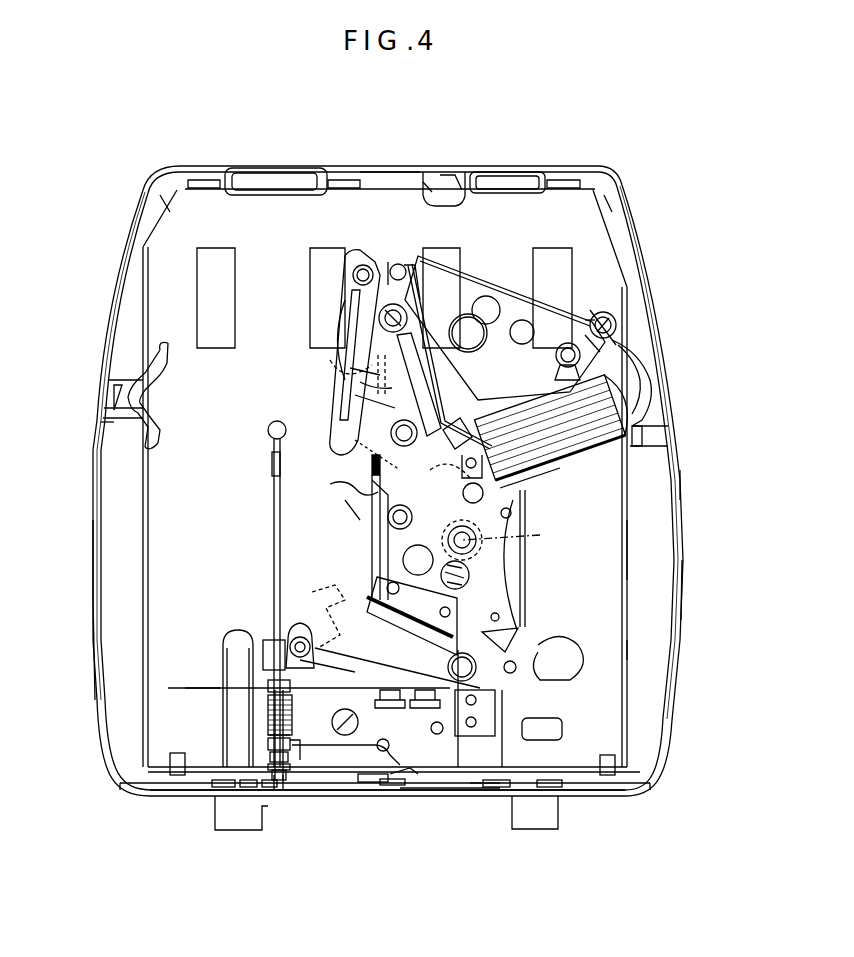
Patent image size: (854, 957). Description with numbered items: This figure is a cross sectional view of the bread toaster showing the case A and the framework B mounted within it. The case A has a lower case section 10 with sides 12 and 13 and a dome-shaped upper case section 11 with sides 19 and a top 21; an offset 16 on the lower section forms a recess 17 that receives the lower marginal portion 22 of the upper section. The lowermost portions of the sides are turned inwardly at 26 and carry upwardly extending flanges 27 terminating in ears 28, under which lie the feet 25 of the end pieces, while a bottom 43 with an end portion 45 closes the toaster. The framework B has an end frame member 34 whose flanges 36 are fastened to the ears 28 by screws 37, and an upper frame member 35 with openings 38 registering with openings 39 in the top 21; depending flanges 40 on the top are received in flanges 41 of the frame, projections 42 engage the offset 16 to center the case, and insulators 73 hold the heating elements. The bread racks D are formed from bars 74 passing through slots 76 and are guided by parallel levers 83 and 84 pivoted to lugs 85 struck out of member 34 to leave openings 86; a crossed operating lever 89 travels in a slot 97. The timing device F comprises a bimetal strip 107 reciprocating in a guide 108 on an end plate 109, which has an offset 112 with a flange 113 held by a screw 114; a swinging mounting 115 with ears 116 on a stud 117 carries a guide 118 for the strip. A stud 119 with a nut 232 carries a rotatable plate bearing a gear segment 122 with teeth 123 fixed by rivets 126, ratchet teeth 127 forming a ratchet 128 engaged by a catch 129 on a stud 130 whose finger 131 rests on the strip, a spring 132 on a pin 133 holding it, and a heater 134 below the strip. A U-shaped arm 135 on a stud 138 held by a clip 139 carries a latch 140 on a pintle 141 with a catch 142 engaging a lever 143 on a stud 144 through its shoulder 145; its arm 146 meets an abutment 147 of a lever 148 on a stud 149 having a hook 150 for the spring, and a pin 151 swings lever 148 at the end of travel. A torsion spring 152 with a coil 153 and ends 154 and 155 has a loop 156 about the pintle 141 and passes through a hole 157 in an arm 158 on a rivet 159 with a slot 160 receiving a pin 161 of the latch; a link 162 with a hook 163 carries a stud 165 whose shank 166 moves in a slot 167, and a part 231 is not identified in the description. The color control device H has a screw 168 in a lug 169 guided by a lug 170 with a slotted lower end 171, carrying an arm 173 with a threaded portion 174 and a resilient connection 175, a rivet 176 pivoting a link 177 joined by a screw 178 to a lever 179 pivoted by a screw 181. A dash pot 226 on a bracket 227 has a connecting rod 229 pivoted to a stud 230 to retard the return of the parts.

The lower case section 10 is at (94, 705).
The upper case section 11 is at (616, 181).
The side 12 is at (92, 615).
The side 13 is at (680, 582).
The offset 16 is at (110, 395).
The recess 17 is at (106, 428).
The sides 19 is at (115, 300).
The top 21 is at (380, 168).
The lower marginal portion 22 is at (662, 408).
The feet 25 is at (232, 830).
The inwardly turned portion 26 is at (146, 793).
The flanges 27 is at (142, 792).
The ears 28 is at (180, 776).
The end frame member 34 is at (598, 553).
The upper frame member 35 is at (425, 178).
The flanges 36 is at (535, 768).
The screws 37 is at (604, 790).
The openings 38 is at (470, 208).
The openings 39 is at (462, 172).
The depending flanges 40 is at (272, 182).
The flanges 41 is at (262, 190).
The projections 42 is at (140, 378).
The bottom 43 is at (452, 792).
The end portion 45 is at (490, 793).
The insulators 73 is at (204, 180).
The bar 74 is at (274, 478).
The slots 76 is at (528, 556).
The parallel lever 83 is at (370, 352).
The parallel lever 84 is at (370, 392).
The lugs 85 is at (360, 347).
The openings 86 is at (355, 380).
The operating lever 89 is at (330, 484).
The slot 97 is at (372, 604).
The strip of bimetal 107 is at (178, 686).
The guide 108 is at (498, 710).
The end plate 109 is at (236, 640).
The offset 112 is at (612, 322).
The flange 113 is at (590, 320).
The screw 114 is at (612, 322).
The swinging mounting 115 is at (372, 668).
The ears 116 is at (298, 636).
The stud 117 is at (296, 645).
The guide 118 is at (335, 716).
The stud 119 is at (480, 540).
The gear segment 122 is at (358, 595).
The gear teeth 123 is at (332, 620).
The rivets 126 is at (444, 606).
The ratchet teeth 127 is at (492, 628).
The ratchet 128 is at (517, 612).
The catch 129 is at (560, 638).
The stud 130 is at (466, 667).
The finger 131 is at (398, 700).
The tension coil spring 132 is at (470, 576).
The pin 133 is at (518, 667).
The heater 134 is at (420, 715).
The U-shaped arm 135 is at (490, 280).
The stud 138 is at (600, 350).
The clip 139 is at (610, 348).
The latch 140 is at (378, 320).
The pintle 141 is at (395, 262).
The catch 142 is at (420, 378).
The catch engaging lever 143 is at (372, 490).
The stud 144 is at (372, 458).
The shoulder 145 is at (390, 430).
The arm 146 is at (462, 478).
The abutment 147 is at (476, 450).
The lever 148 is at (480, 485).
The stud 149 is at (505, 440).
The hook 150 is at (500, 545).
The pin 151 is at (520, 510).
The torsion spring 152 is at (500, 312).
The coil 153 is at (534, 334).
The spring end 154 is at (470, 312).
The spring end 155 is at (365, 440).
The loop 156 is at (398, 262).
The hole 157 is at (372, 460).
The arm 158 is at (360, 400).
The rivet 159 is at (388, 520).
The slot 160 is at (340, 300).
The pin 161 is at (345, 268).
The link 162 is at (455, 426).
The hook 163 is at (345, 500).
The stud 165 is at (358, 312).
The shank 166 is at (363, 268).
The slot 167 is at (408, 275).
The screw 168 is at (288, 782).
The tapped lug 169 is at (272, 680).
The lug 170 is at (292, 774).
The lower end 171 is at (278, 792).
The arm 173 is at (268, 746).
The threaded portion 174 is at (268, 700).
The resilient connection 175 is at (292, 712).
The rivet 176 is at (268, 725).
The link 177 is at (350, 758).
The screw 178 is at (370, 780).
The lever 179 is at (405, 782).
The screw 181 is at (392, 786).
The dash pot 226 is at (622, 440).
The bracket 227 is at (640, 446).
The connecting rod 229 is at (560, 462).
The stud 230 is at (545, 478).
The rod 231 is at (440, 275).
The nut 232 is at (540, 535).
The case A is at (681, 480).
The framework B is at (620, 648).
The bread racks D is at (272, 462).
The timing device F is at (196, 686).
The color control device H is at (268, 708).